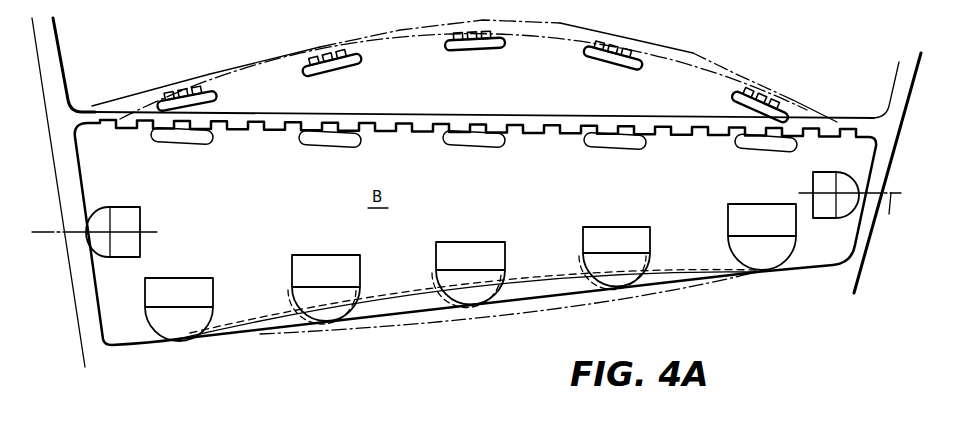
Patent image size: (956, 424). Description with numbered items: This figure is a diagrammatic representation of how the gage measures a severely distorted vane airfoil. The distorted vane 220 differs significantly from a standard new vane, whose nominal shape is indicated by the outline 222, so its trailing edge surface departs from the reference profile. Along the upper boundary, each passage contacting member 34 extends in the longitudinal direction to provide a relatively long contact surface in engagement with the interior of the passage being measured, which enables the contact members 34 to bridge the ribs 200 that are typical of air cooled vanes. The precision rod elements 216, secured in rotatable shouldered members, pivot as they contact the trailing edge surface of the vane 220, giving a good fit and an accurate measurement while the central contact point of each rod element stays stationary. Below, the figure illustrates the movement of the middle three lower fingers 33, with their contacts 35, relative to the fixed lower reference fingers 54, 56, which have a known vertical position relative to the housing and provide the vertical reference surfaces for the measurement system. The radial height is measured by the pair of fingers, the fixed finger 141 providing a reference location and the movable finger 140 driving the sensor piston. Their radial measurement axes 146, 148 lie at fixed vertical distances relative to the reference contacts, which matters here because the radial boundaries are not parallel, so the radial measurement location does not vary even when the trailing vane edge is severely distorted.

The severely distorted vane 220 is at (277, 52).
The precision rod element 216 is at (350, 60).
The standard new vane shape 222 is at (403, 117).
The ribs 200 is at (238, 133).
The passage contacting member 34 is at (202, 140).
The fixed finger 141 is at (813, 182).
The movable finger 140 is at (128, 228).
The radial measurement axis 146 is at (47, 233).
The radial measurement axis 148 is at (857, 213).
The fixed lower reference finger 54 is at (769, 208).
The fixed lower reference finger 56 is at (200, 280).
The lower finger 33 is at (340, 258).
The contact 35 is at (455, 316).